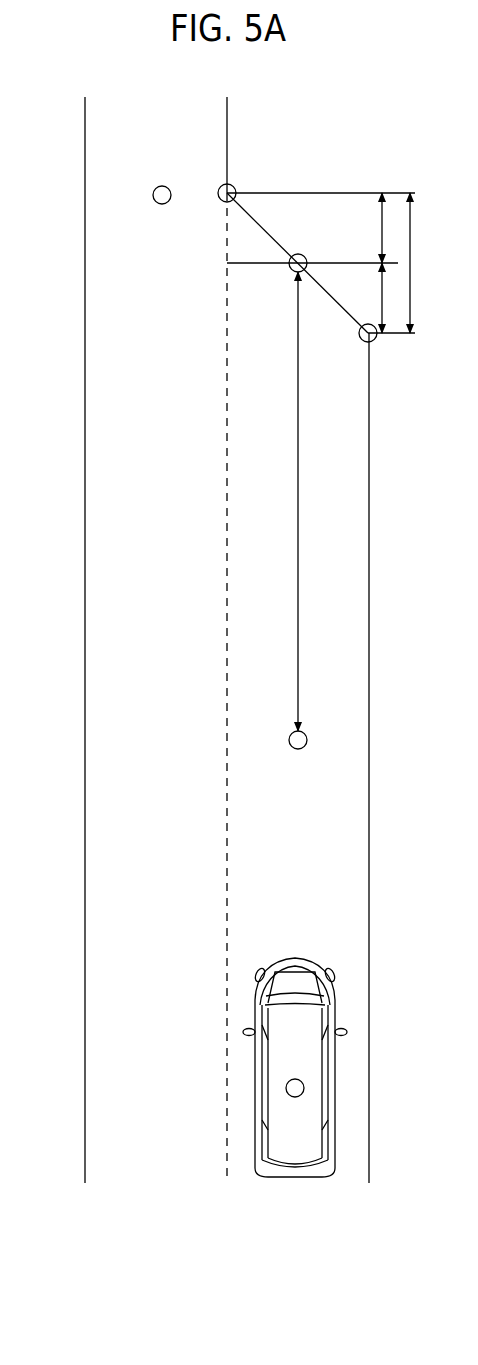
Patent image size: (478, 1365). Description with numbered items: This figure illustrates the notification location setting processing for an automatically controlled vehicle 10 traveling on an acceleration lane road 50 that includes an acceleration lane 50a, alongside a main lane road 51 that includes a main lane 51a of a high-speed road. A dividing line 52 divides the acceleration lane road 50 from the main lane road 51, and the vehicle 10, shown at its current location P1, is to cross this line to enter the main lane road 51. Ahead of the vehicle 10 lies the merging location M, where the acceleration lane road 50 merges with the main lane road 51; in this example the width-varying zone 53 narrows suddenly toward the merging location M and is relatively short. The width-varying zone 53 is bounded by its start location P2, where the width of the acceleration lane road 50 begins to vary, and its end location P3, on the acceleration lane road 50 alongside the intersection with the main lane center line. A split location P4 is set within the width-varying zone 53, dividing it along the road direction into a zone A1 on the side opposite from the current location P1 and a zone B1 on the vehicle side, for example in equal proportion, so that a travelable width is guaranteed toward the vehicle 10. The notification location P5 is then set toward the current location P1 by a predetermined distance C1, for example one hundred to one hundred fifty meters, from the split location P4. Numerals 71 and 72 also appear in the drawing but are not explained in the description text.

The vehicle 10 is at (325, 1138).
The acceleration lane road 50 is at (352, 932).
The acceleration lane 50a is at (355, 838).
The main lane road 51 is at (105, 993).
The main lane 51a is at (152, 836).
The dividing line 52 is at (226, 797).
The width-varying zone 53 is at (430, 263).
The road edge 71 is at (477, 950).
The road shoulder 72 is at (464, 746).
The merging location M is at (165, 186).
The current location P1 is at (304, 1086).
The start location of the width-varying zone P2 is at (375, 340).
The end location of the width-varying zone P3 is at (234, 189).
The split location P4 is at (292, 272).
The notification location P5 is at (290, 734).
The zone A1 is at (365, 228).
The zone B1 is at (365, 298).
The predetermined distance C1 is at (280, 501).